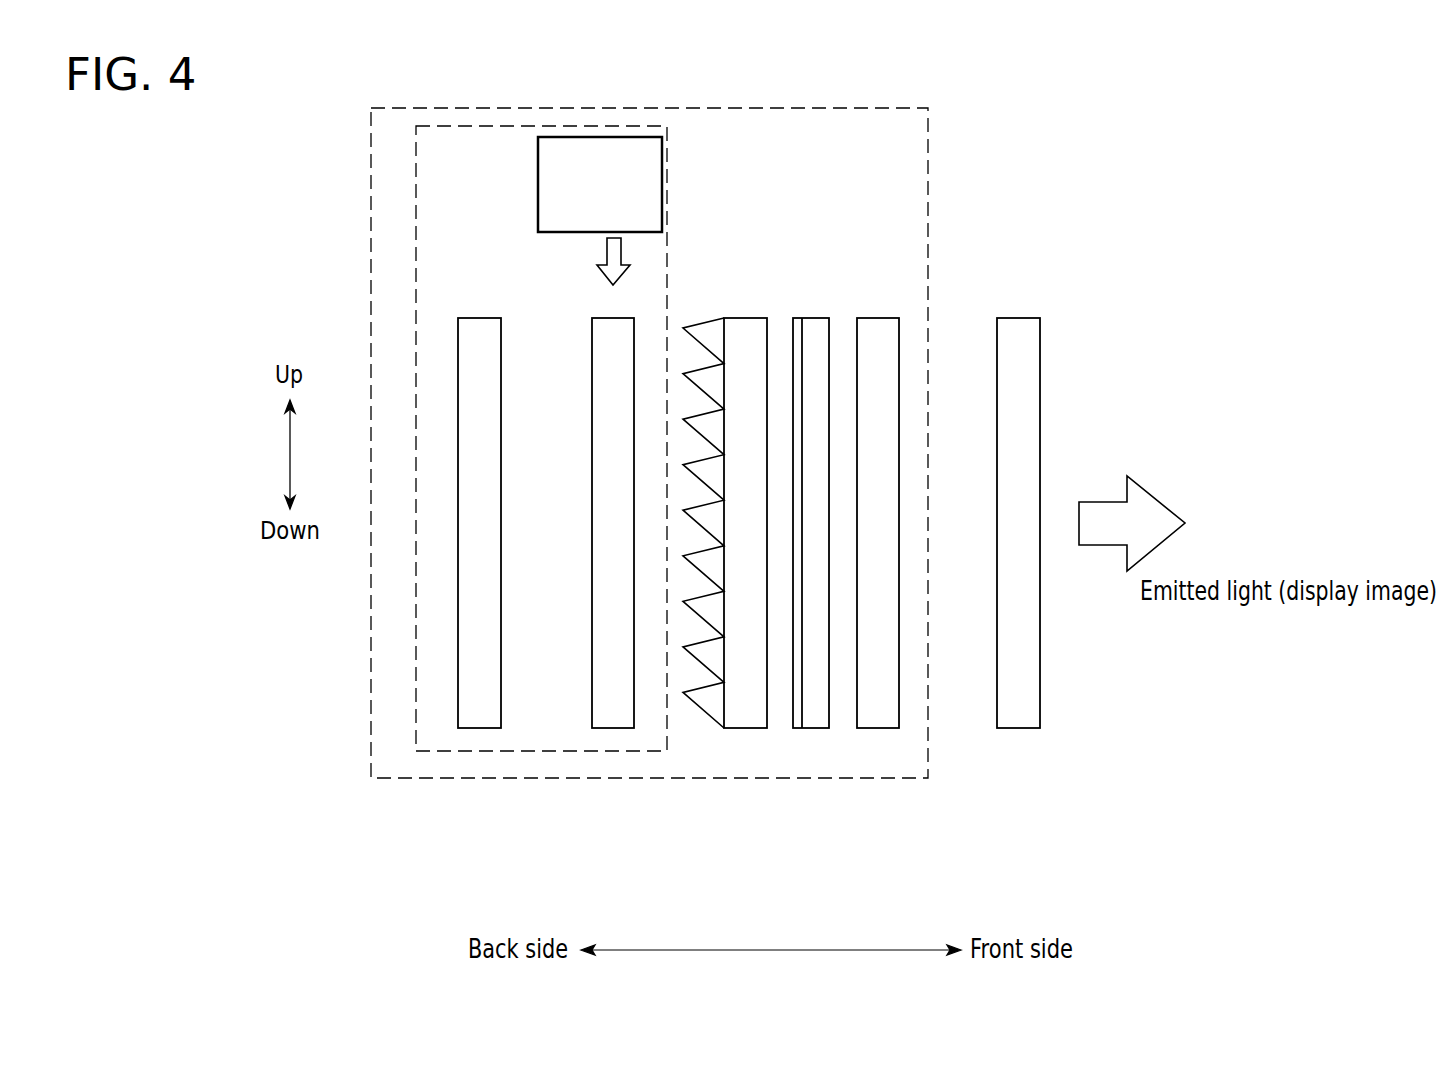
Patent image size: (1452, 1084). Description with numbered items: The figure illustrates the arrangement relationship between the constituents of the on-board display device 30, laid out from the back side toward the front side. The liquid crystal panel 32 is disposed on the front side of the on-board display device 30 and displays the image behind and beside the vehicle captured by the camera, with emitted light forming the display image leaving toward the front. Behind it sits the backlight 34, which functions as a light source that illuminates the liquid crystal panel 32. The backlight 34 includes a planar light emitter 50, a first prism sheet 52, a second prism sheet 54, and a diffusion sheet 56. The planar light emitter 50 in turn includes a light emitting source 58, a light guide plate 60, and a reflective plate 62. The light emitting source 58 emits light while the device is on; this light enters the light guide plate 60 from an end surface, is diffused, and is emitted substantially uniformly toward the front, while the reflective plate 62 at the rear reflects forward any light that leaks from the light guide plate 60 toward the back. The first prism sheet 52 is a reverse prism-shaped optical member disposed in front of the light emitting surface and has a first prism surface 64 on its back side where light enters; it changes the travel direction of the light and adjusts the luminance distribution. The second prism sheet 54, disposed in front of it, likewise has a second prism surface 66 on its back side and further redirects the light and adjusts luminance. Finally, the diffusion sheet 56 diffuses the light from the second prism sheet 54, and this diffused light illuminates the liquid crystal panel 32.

The on-board display device 30 is at (1328, 284).
The liquid crystal panel 32 is at (1022, 729).
The backlight 34 is at (833, 107).
The planar light emitter 50 is at (497, 125).
The first prism sheet 52 is at (744, 733).
The second prism sheet 54 is at (812, 733).
The diffusion sheet 56 is at (883, 729).
The light emitting source 58 is at (538, 195).
The light guide plate 60 is at (612, 729).
The reflective plate 62 is at (483, 729).
The first prism surface 64 is at (706, 330).
The second prism surface 66 is at (796, 320).